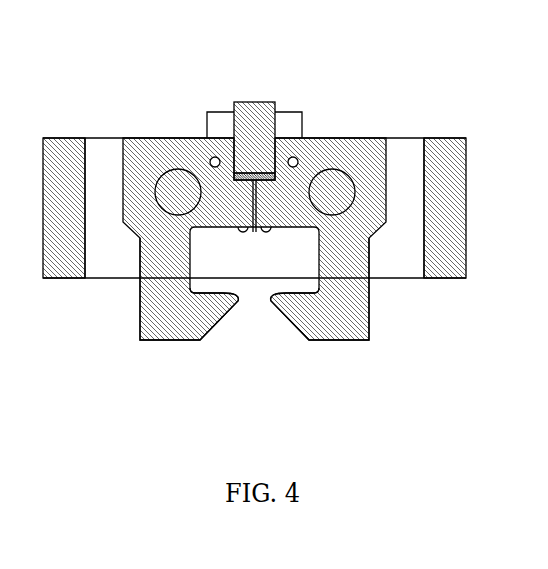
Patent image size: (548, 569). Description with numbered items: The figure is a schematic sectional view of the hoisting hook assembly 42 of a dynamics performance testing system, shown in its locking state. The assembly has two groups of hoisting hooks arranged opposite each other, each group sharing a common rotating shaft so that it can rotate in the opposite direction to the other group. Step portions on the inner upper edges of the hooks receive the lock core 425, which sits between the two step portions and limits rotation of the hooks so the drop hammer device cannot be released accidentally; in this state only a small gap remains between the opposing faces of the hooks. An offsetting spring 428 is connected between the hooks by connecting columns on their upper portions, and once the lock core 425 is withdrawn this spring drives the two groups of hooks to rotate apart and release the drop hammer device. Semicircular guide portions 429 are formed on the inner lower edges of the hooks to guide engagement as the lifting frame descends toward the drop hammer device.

The hoisting hook assembly 42 is at (278, 215).
The lock core 425 is at (250, 112).
The offsetting spring 428 is at (252, 172).
The guide portion 429 is at (266, 232).